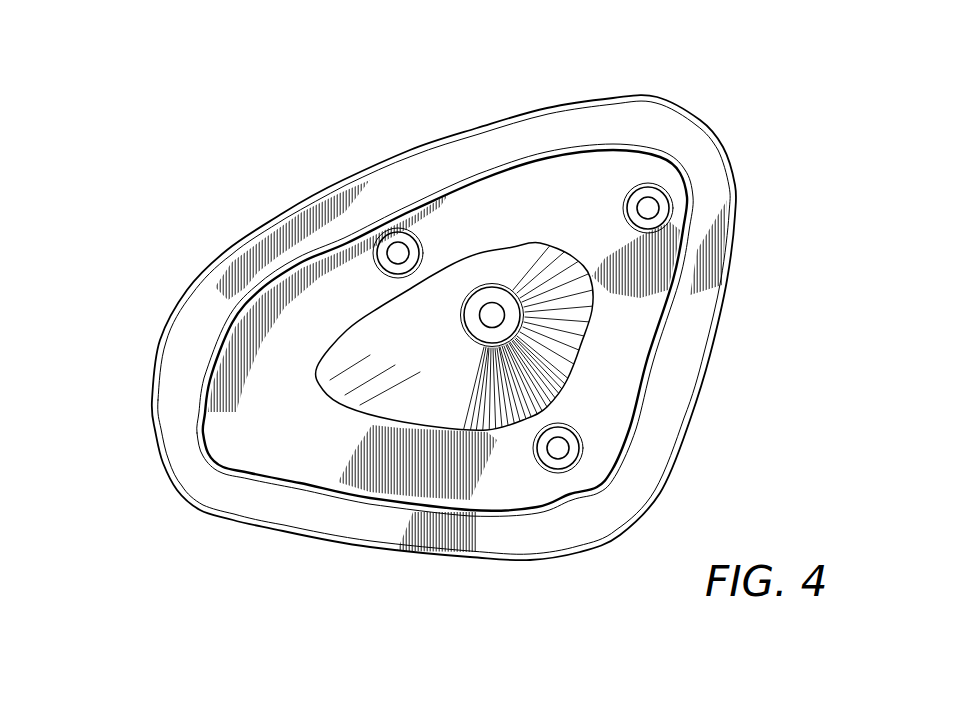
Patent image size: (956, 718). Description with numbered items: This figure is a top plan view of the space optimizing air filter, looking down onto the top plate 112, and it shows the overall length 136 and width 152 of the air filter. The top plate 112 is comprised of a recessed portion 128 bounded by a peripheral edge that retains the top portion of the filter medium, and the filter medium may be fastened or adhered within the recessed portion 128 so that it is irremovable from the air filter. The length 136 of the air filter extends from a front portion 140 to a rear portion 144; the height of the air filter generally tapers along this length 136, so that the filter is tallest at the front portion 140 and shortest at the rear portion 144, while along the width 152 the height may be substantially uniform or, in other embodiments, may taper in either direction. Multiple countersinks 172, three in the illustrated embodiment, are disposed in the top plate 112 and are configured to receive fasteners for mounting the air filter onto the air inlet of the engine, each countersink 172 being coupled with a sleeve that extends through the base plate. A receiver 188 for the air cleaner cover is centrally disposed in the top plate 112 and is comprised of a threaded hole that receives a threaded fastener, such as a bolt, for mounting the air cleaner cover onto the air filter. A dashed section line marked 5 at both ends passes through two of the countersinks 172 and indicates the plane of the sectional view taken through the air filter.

The top plate 112 is at (706, 350).
The recessed portion 128 is at (220, 497).
The length 136 is at (736, 150).
The front portion 140 is at (762, 283).
The rear portion 144 is at (110, 404).
The width 152 is at (470, 562).
The countersinks 172 is at (388, 232).
The receiver 188 is at (493, 300).
The section line 5- 5 is at (498, 610).